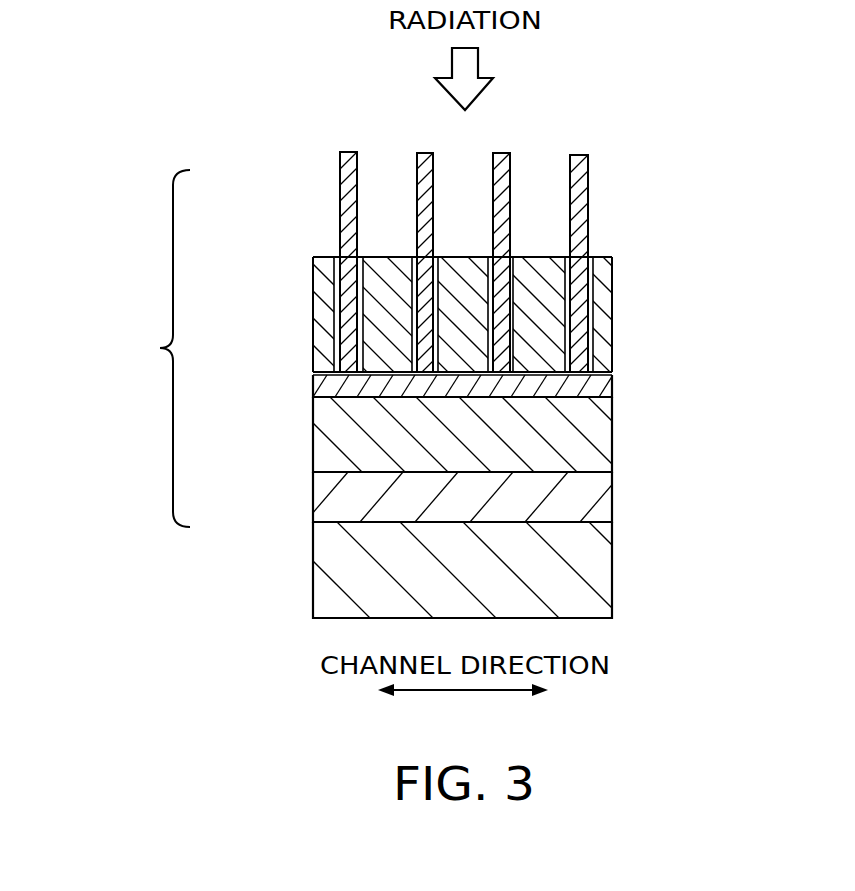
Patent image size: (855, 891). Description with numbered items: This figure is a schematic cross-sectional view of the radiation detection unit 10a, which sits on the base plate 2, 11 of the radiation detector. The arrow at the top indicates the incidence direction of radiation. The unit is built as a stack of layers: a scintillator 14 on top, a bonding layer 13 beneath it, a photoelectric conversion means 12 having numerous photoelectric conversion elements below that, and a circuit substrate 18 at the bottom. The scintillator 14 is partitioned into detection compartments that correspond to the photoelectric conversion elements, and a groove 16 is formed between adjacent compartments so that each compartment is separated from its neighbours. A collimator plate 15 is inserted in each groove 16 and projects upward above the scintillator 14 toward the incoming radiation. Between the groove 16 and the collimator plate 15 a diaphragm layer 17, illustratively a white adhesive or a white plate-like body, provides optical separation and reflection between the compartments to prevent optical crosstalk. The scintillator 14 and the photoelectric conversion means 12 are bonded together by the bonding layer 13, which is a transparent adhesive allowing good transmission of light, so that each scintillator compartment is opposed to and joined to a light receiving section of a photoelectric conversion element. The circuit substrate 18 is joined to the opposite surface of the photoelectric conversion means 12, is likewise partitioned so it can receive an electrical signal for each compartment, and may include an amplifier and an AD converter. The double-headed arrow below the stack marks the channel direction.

The radiation detection unit 10a is at (113, 348).
The base plate 2 is at (441, 570).
The base plate 11 is at (323, 583).
The circuit substrate 18 is at (318, 492).
The photoelectric conversion means 12 is at (318, 437).
The bonding layer 13 is at (318, 387).
The scintillator 14 is at (313, 357).
The groove 16 is at (330, 330).
The diaphragm layer 17 is at (337, 260).
The collimator plate 15 is at (340, 192).